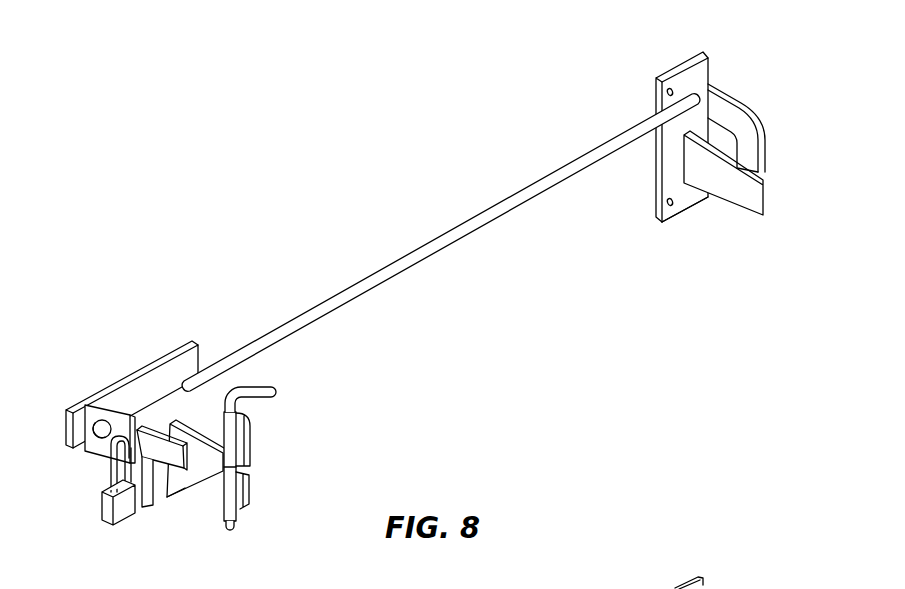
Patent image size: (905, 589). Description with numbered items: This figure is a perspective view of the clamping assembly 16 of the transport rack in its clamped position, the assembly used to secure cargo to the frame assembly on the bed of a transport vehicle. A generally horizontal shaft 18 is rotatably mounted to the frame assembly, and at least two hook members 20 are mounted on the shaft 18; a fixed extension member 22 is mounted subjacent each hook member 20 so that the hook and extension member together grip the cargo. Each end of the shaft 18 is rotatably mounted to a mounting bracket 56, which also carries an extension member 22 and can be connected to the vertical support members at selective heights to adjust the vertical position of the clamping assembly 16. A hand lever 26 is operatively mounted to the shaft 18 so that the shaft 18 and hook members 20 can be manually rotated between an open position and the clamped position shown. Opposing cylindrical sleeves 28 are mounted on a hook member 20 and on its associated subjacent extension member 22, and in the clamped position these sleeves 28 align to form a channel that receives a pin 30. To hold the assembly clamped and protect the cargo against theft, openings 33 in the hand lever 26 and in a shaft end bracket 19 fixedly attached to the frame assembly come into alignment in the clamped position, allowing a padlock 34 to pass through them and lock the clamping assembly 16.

The clamping assembly 16 is at (327, 224).
The shaft 18 is at (417, 256).
The shaft end bracket 19 is at (148, 364).
The hook member 20 is at (252, 456).
The extension member 22 is at (201, 490).
The hand lever 26 is at (158, 501).
The cylindrical sleeve 28 is at (251, 431).
The pin 30 is at (268, 385).
The opening 33 is at (118, 417).
The padlock 34 is at (101, 509).
The mounting bracket 56 is at (181, 494).